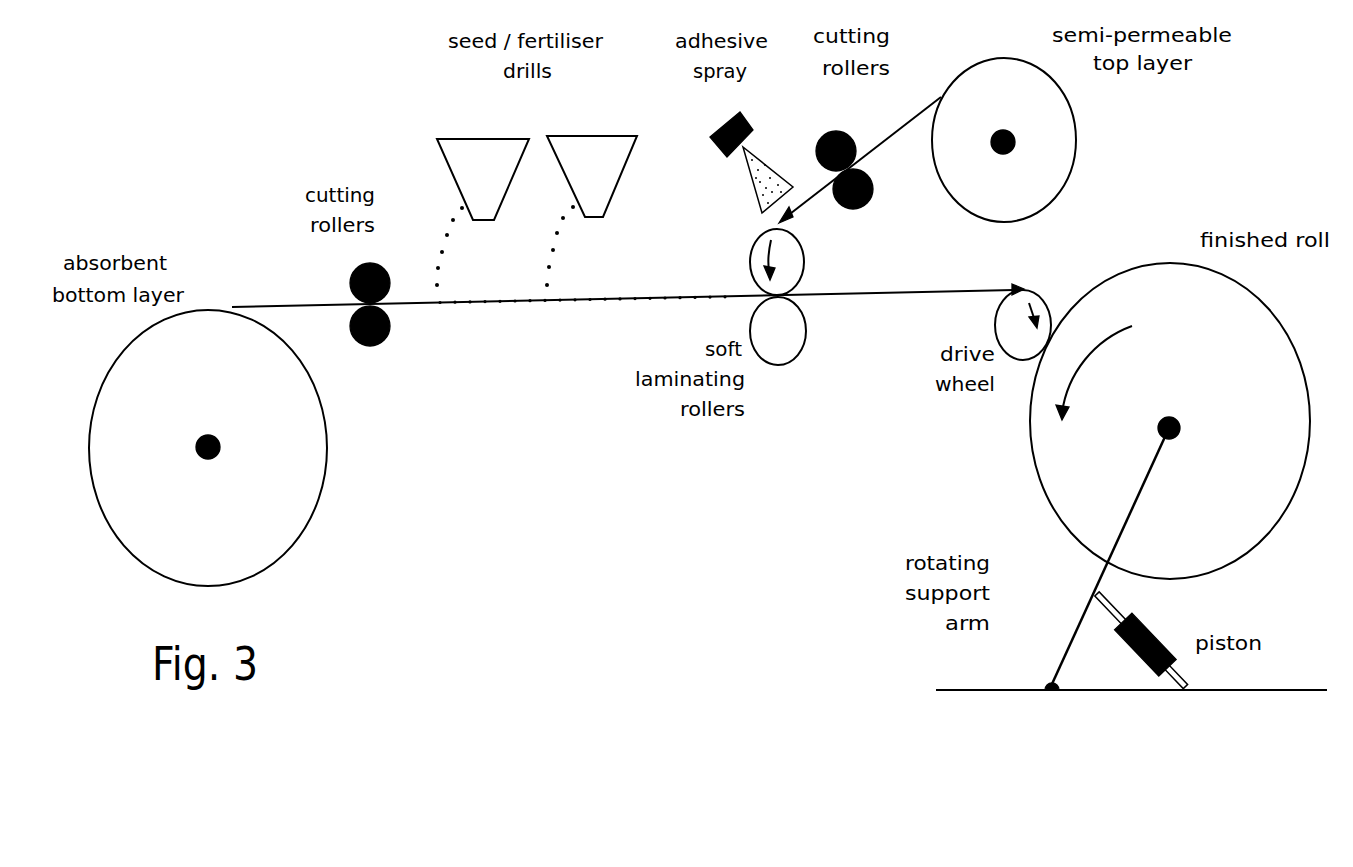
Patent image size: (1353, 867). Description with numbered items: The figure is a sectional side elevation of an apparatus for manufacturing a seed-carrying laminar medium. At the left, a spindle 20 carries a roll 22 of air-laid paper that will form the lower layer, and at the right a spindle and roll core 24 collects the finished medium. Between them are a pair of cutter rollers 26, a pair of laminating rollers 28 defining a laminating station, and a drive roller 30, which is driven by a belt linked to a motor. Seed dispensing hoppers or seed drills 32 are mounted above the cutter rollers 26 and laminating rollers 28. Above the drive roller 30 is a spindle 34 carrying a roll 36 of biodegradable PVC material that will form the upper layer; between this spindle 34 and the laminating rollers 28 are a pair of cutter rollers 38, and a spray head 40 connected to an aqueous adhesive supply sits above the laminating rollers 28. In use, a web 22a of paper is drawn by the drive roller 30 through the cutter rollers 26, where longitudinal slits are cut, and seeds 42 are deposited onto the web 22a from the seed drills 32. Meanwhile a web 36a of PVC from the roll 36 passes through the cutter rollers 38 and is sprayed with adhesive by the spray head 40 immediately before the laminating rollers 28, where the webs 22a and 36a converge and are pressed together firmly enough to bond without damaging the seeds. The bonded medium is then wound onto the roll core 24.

The spindle 20 is at (218, 458).
The roll 22 is at (208, 448).
The web 22a is at (628, 310).
The spindle and roll core 24 is at (1187, 431).
The cutter rollers 26 is at (359, 298).
The laminating rollers 28 is at (778, 297).
The drive roller 30 is at (1023, 325).
The seed drills 32 is at (537, 178).
The spindle 34 is at (994, 158).
The roll 36 is at (1004, 140).
The web 36a is at (860, 160).
The cutter rollers 38 is at (847, 164).
The spray head 40 is at (751, 158).
The seeds 42 is at (505, 246).